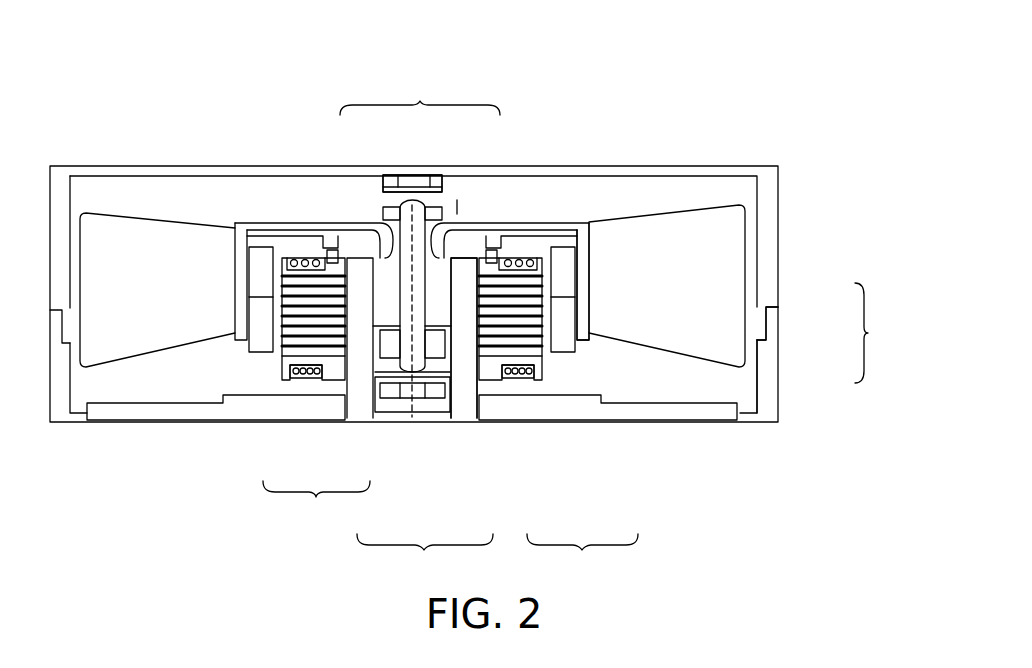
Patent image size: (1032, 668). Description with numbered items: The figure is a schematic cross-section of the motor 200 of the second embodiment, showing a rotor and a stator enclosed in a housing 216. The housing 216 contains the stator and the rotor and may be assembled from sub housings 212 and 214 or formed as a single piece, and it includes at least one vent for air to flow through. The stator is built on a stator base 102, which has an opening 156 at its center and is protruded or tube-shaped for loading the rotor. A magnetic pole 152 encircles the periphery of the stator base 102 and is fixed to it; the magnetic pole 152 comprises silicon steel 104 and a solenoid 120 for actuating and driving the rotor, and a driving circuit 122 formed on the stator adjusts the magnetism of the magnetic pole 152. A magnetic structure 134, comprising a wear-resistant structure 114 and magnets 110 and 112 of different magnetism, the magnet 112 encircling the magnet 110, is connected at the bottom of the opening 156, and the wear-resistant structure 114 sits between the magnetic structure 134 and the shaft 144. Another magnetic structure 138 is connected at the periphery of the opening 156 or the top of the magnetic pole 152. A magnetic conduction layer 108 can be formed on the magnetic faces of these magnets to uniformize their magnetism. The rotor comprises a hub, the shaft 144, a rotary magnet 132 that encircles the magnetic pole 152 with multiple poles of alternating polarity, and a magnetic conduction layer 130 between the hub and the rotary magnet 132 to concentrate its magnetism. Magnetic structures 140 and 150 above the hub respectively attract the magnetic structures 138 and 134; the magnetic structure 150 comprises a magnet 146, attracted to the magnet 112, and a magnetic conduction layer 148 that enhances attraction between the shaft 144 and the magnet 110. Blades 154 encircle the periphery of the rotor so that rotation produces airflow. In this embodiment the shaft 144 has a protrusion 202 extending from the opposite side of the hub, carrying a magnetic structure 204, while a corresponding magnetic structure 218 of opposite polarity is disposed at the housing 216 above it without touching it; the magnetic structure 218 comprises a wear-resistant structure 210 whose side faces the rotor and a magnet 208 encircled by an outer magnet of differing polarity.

The stator base 102 is at (123, 415).
The silicon steel 104 is at (327, 350).
The magnetic conduction layer 108 is at (402, 420).
The magnet 110 is at (425, 422).
The magnet 112 is at (435, 412).
The wear-resistant structure 114 is at (386, 413).
The solenoid 120 is at (300, 378).
The driving circuit 122 is at (232, 408).
The magnetic conduction layer 130 is at (589, 272).
The rotary magnet 132 is at (565, 278).
The magnetic structure 134 is at (425, 559).
The magnetic structure 138 is at (500, 250).
The magnetic structure 140 is at (323, 240).
The shaft 144 is at (593, 257).
The magnet 146 is at (442, 340).
The magnetic conduction layer 148 is at (478, 336).
The magnetic structure 150 is at (582, 559).
The magnetic pole 152 is at (316, 505).
The blades 154 is at (727, 342).
The opening 156 is at (386, 232).
The motor 200 is at (440, 175).
The protrusion 202 is at (444, 217).
The magnetic structure 204 is at (462, 205).
The magnet 208 is at (415, 177).
The wear-resistant structure 210 is at (388, 185).
The sub housing 212 is at (770, 298).
The sub housing 214 is at (770, 372).
The housing 216 is at (886, 333).
The magnetic structure 218 is at (420, 90).